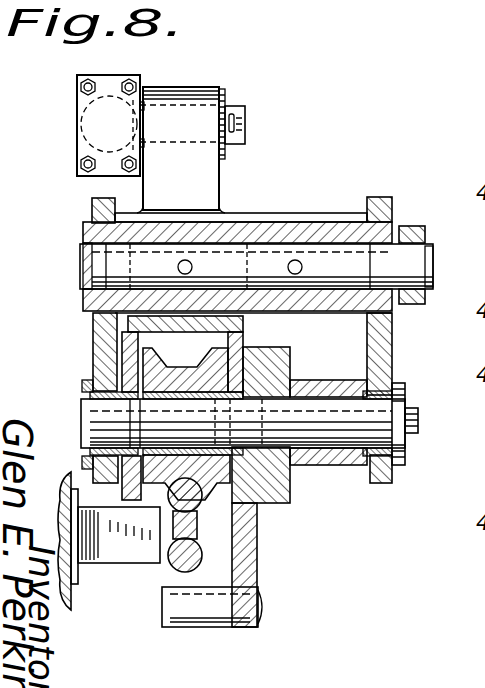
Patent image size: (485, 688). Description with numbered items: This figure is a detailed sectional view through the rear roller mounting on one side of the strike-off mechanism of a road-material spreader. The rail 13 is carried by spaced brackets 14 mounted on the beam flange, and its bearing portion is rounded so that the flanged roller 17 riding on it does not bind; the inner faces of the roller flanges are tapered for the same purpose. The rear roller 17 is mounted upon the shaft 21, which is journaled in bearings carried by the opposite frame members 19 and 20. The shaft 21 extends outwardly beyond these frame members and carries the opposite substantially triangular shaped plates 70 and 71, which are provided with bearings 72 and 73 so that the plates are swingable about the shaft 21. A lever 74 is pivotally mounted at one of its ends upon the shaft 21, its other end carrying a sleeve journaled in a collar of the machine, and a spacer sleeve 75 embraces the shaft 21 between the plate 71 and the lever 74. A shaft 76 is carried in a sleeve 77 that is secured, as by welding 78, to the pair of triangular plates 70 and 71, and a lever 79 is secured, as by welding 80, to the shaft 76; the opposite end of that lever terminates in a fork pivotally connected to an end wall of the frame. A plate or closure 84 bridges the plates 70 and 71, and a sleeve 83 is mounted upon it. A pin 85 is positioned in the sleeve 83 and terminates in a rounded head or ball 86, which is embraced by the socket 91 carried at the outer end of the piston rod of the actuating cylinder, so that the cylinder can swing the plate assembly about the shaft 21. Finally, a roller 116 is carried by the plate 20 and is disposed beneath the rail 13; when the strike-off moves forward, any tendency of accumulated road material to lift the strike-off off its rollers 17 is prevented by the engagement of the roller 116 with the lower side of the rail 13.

The rail 13 is at (198, 511).
The bracket 14 is at (120, 552).
The flanged roller 17 is at (248, 346).
The frame member 19 is at (127, 363).
The frame member 20 is at (243, 379).
The shaft 21 is at (82, 420).
The triangular plate 70 is at (93, 334).
The triangular plate 71 is at (386, 339).
The bearing 72 is at (92, 392).
The bearing 73 is at (373, 392).
The lever 74 is at (290, 490).
The spacer sleeve 75 is at (322, 465).
The shaft 76 is at (404, 250).
The sleeve 77 is at (350, 300).
The welding 78 is at (92, 212).
The lever 79 is at (410, 228).
The welding 80 is at (431, 243).
The sleeve 83 is at (202, 188).
The plate or closure 84 is at (287, 211).
The pin 85 is at (235, 110).
The ball 86 is at (80, 118).
The socket 91 is at (98, 177).
The roller 116 is at (198, 628).